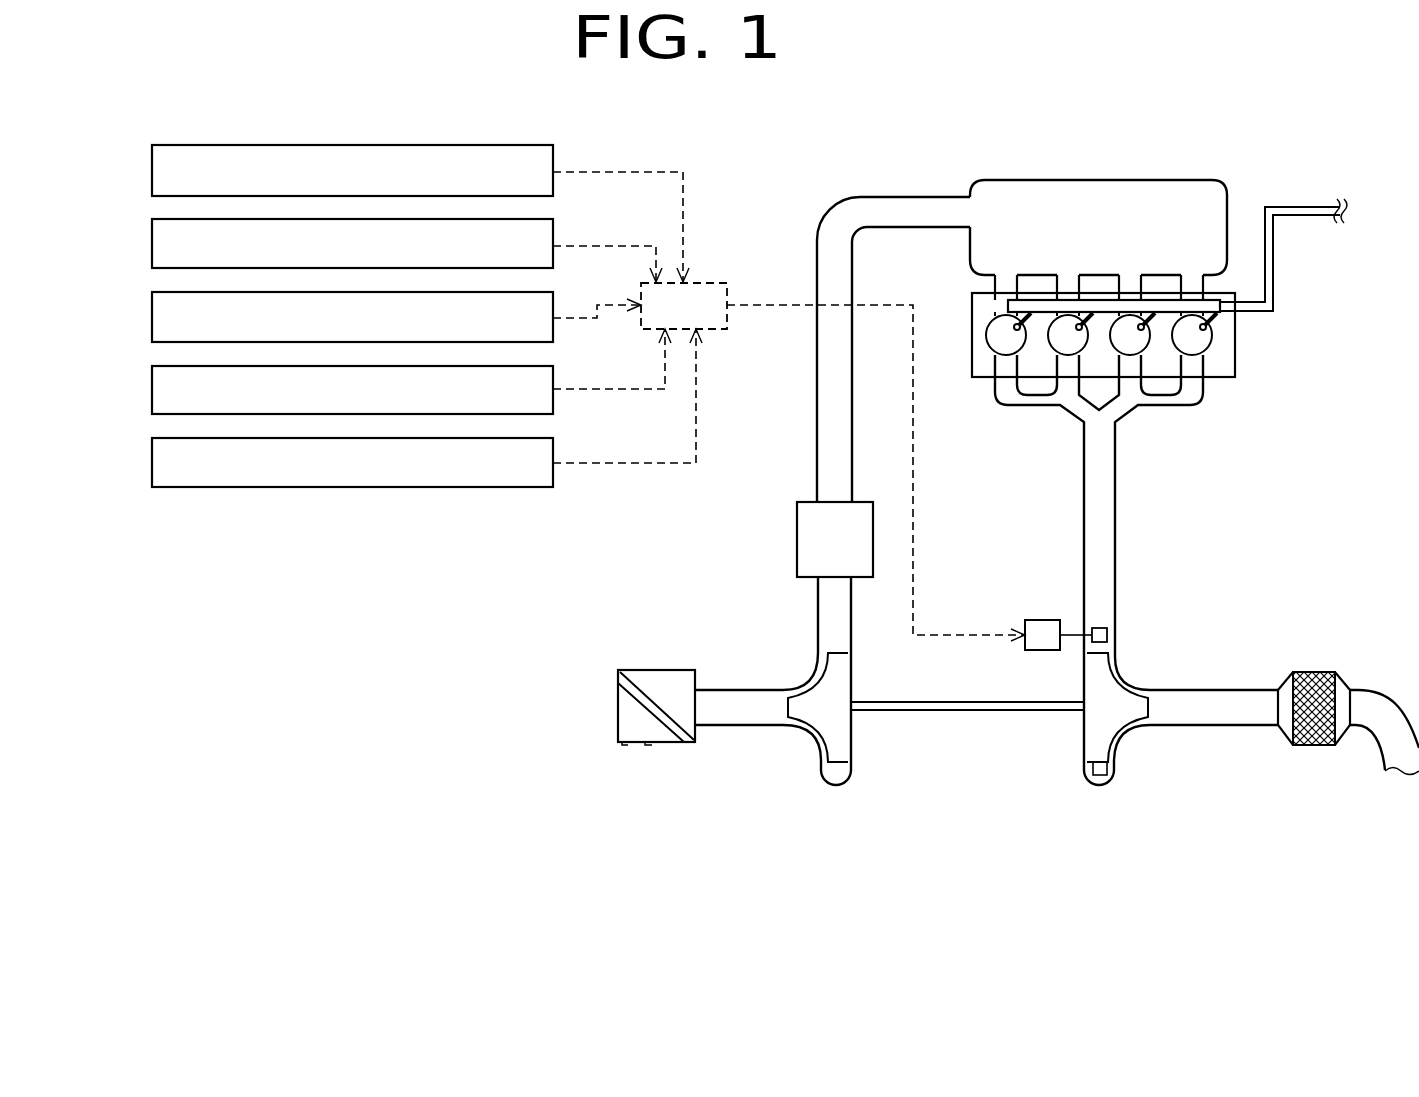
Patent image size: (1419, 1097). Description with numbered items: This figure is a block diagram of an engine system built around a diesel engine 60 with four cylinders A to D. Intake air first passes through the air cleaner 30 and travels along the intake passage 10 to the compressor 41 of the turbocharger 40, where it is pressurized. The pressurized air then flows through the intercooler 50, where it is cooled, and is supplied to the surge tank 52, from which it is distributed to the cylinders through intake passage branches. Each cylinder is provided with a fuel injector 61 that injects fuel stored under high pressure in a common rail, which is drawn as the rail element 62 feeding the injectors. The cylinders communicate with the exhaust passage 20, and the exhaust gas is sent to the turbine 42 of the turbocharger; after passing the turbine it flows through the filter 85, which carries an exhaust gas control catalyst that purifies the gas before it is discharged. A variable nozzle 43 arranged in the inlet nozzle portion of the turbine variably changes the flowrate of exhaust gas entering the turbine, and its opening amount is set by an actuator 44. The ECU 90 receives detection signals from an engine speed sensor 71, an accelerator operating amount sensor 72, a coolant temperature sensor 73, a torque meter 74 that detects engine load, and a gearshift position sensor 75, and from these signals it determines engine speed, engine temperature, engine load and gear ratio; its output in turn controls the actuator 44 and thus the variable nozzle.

The intake passage 10 is at (817, 418).
The exhaust passage 20 is at (1118, 517).
The air cleaner 30 is at (652, 678).
The turbocharger 40 is at (975, 788).
The compressor 41 is at (843, 745).
The turbine 42 is at (1093, 745).
The variable nozzle 43 is at (1097, 628).
The actuator 44 is at (1040, 622).
The intercooler 50 is at (815, 535).
The surge tank 52 is at (1133, 180).
The diesel engine 60 is at (1238, 344).
The fuel injector 61 is at (1212, 333).
The fuel injection rail 62 is at (1220, 300).
The engine speed sensor 71 is at (152, 172).
The accelerator operating amount sensor 72 is at (152, 246).
The coolant temperature sensor 73 is at (152, 318).
The torque meter 74 is at (152, 389).
The gearshift position sensor 75 is at (152, 463).
The filter 85 is at (1312, 745).
The ECU 90 is at (712, 282).